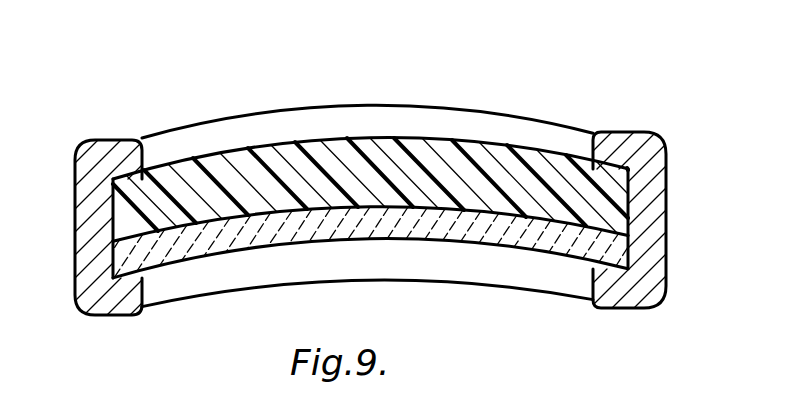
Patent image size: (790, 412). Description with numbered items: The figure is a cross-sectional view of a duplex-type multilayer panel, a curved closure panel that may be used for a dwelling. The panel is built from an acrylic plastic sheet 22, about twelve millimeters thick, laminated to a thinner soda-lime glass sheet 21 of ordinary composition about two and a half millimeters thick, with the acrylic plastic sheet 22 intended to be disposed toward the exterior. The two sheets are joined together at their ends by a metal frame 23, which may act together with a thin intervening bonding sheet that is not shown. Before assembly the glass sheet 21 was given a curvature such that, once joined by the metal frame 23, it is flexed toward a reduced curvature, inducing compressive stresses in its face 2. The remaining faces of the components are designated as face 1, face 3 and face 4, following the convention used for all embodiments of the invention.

The face 1 is at (505, 245).
The face 2 is at (627, 233).
The face 3 is at (628, 234).
The face 4 is at (480, 142).
The soda-lime glass sheet 21 is at (172, 245).
The acrylic plastic sheet 22 is at (255, 175).
The metal frame 23 is at (105, 163).